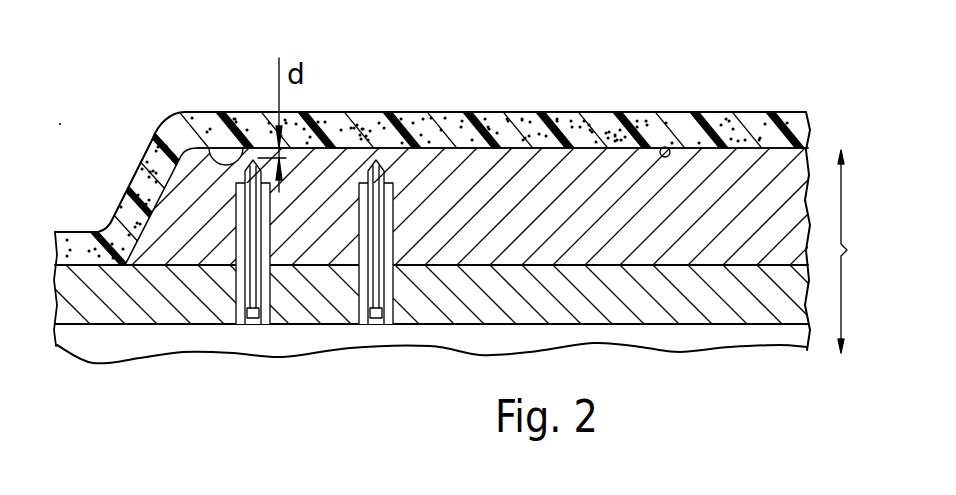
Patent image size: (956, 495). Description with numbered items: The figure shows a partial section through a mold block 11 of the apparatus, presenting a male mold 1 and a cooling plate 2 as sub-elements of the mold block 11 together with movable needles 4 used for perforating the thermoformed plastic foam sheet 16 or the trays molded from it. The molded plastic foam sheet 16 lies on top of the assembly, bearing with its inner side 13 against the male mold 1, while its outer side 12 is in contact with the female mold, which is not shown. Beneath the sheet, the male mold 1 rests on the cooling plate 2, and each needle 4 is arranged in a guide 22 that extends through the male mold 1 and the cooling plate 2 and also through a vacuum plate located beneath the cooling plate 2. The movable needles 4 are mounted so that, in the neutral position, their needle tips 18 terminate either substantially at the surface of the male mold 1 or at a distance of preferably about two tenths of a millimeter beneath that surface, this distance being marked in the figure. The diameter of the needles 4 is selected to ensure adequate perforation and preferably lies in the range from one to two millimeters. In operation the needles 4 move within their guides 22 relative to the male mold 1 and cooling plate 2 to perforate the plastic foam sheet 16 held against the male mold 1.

The male mold 1 is at (728, 165).
The cooling plate 2 is at (748, 300).
The movable needles 4 is at (253, 326).
The mold block 11 is at (859, 251).
The outer side 12 is at (576, 111).
The inner side 13 is at (670, 147).
The thermoformed plastic foam sheet 16 is at (138, 177).
The needle tips 18 is at (213, 151).
The guide 22 is at (366, 326).